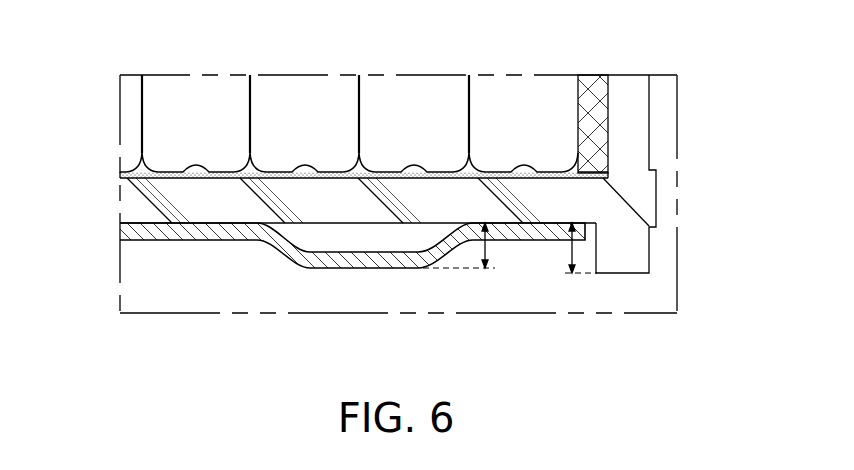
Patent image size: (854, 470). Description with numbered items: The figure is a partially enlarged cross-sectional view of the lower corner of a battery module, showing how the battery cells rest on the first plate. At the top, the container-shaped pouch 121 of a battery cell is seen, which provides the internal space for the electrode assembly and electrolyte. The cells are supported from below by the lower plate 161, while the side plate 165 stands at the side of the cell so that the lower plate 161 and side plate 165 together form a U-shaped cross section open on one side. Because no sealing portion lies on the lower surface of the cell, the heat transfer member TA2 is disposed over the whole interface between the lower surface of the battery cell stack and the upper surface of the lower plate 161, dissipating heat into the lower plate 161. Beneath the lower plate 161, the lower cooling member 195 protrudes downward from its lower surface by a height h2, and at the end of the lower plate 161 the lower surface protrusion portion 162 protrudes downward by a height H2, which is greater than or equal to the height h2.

The pouch 121 is at (307, 118).
The side plate 165 is at (628, 118).
The heat transfer member TA2 is at (142, 180).
The lower plate 161 is at (210, 210).
The lower cooling member 195 is at (360, 258).
The lower surface protrusion portion 162 is at (628, 250).
The height of lower cooling member protrusion h2 is at (470, 240).
The height of lower protrusion portion H2 is at (572, 243).